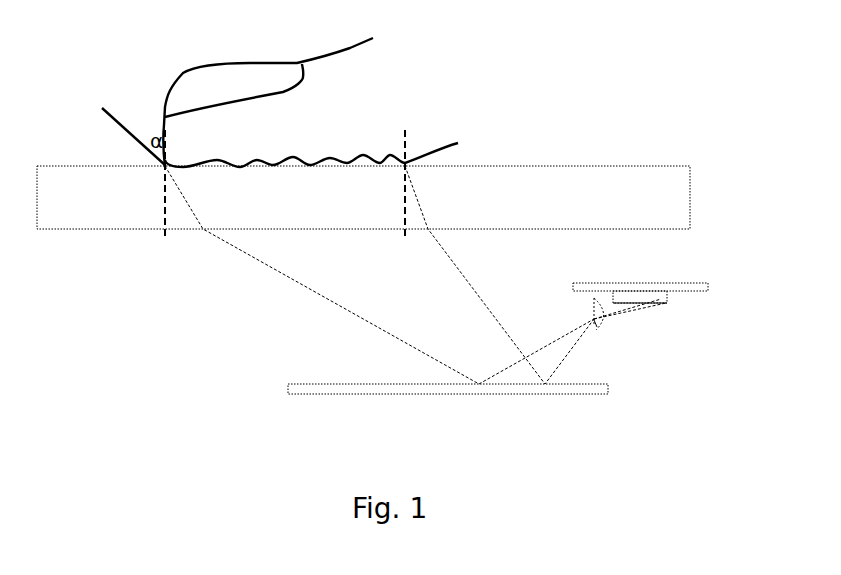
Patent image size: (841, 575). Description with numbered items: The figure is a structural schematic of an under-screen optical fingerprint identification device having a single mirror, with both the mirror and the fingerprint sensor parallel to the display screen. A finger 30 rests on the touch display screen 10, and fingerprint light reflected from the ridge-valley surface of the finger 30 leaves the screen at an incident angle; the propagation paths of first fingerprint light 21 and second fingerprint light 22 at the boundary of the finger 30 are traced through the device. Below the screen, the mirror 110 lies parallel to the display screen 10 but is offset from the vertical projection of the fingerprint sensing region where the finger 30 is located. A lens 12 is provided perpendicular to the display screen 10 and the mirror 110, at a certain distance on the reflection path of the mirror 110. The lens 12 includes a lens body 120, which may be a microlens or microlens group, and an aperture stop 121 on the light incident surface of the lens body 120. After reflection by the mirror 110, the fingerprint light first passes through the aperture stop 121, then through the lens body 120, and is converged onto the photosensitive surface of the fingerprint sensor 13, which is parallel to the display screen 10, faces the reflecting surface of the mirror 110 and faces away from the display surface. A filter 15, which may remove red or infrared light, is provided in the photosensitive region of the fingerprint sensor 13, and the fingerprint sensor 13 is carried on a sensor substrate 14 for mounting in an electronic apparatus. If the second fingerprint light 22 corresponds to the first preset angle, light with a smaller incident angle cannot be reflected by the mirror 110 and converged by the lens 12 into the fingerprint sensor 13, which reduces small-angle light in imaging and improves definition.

The touch display screen 10 is at (608, 183).
The finger 30 is at (227, 125).
The first fingerprint light 21 is at (336, 301).
The second fingerprint light 22 is at (468, 275).
The mirror 110 is at (437, 392).
The lens 12 is at (662, 335).
The lens body 120 is at (602, 321).
The aperture stop 121 is at (603, 323).
The fingerprint sensor 13 is at (622, 293).
The sensor substrate 14 is at (685, 287).
The filter 15 is at (663, 302).